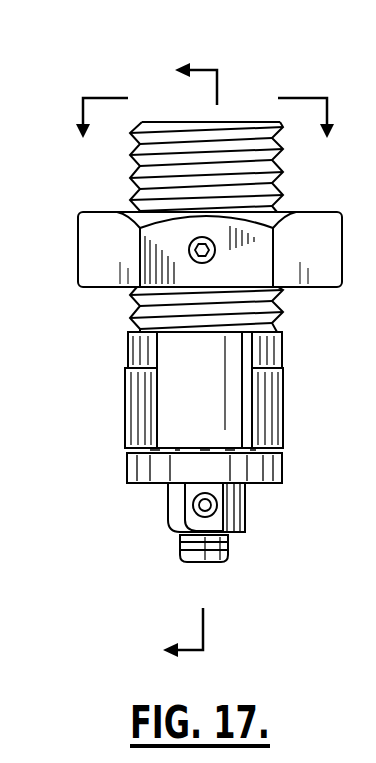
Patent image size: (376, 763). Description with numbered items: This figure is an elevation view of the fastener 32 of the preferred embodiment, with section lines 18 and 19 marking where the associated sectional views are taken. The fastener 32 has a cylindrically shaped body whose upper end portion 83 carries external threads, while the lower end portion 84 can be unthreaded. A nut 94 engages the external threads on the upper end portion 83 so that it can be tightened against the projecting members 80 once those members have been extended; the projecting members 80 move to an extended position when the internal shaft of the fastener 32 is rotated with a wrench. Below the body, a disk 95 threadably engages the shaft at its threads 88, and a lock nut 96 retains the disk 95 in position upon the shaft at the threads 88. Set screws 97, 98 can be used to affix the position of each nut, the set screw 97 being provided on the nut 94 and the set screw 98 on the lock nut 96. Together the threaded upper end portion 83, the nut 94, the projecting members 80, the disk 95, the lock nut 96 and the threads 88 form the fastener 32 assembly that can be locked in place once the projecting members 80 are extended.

The fastener 32 is at (286, 49).
The section line 18 is at (171, 363).
The section line 19 is at (205, 140).
The upper end portion 83 is at (233, 132).
The nut 94 is at (82, 272).
The set screw 97 is at (216, 254).
The lower end portion 84 is at (183, 407).
The projecting members 80 is at (140, 405).
The disk 95 is at (142, 472).
The lock nut 96 is at (242, 528).
The set screw 98 is at (193, 511).
The threads 88 is at (213, 563).